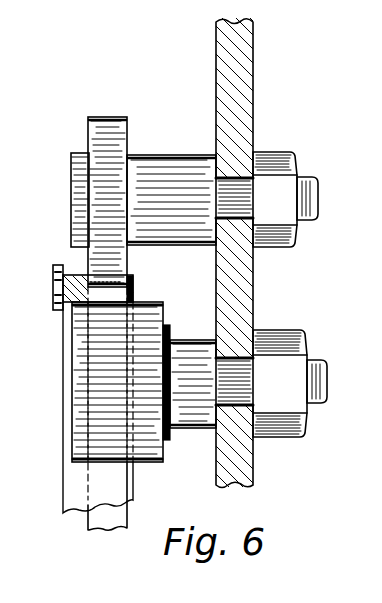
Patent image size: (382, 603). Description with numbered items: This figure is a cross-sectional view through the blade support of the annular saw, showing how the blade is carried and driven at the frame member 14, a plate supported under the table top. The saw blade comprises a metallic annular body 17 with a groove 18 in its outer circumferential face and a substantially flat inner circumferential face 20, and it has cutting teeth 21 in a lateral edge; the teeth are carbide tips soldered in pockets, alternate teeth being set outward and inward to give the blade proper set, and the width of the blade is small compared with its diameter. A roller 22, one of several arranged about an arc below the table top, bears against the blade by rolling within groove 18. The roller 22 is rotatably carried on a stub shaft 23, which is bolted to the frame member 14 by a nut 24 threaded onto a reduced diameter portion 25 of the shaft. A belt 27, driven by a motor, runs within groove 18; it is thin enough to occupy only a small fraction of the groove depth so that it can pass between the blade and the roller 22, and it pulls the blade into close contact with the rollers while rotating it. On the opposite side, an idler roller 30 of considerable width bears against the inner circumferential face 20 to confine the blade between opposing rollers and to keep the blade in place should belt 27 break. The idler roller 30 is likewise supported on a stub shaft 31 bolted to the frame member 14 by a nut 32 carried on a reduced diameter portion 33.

The frame member 14 is at (253, 56).
The annular body 17 is at (133, 303).
The groove 18 is at (131, 292).
The inner circumferential face 20 is at (68, 353).
The cutting teeth 21 is at (58, 265).
The rollers 22 is at (105, 117).
The stub shaft 23 is at (150, 153).
The nut 24 is at (267, 152).
The reduced diameter portion 25 is at (320, 191).
The belt 27 is at (122, 281).
The idler rollers 30 is at (150, 462).
The stub shafts 31 is at (200, 340).
The nuts 32 is at (268, 330).
The reduced diameter portions 33 is at (327, 379).